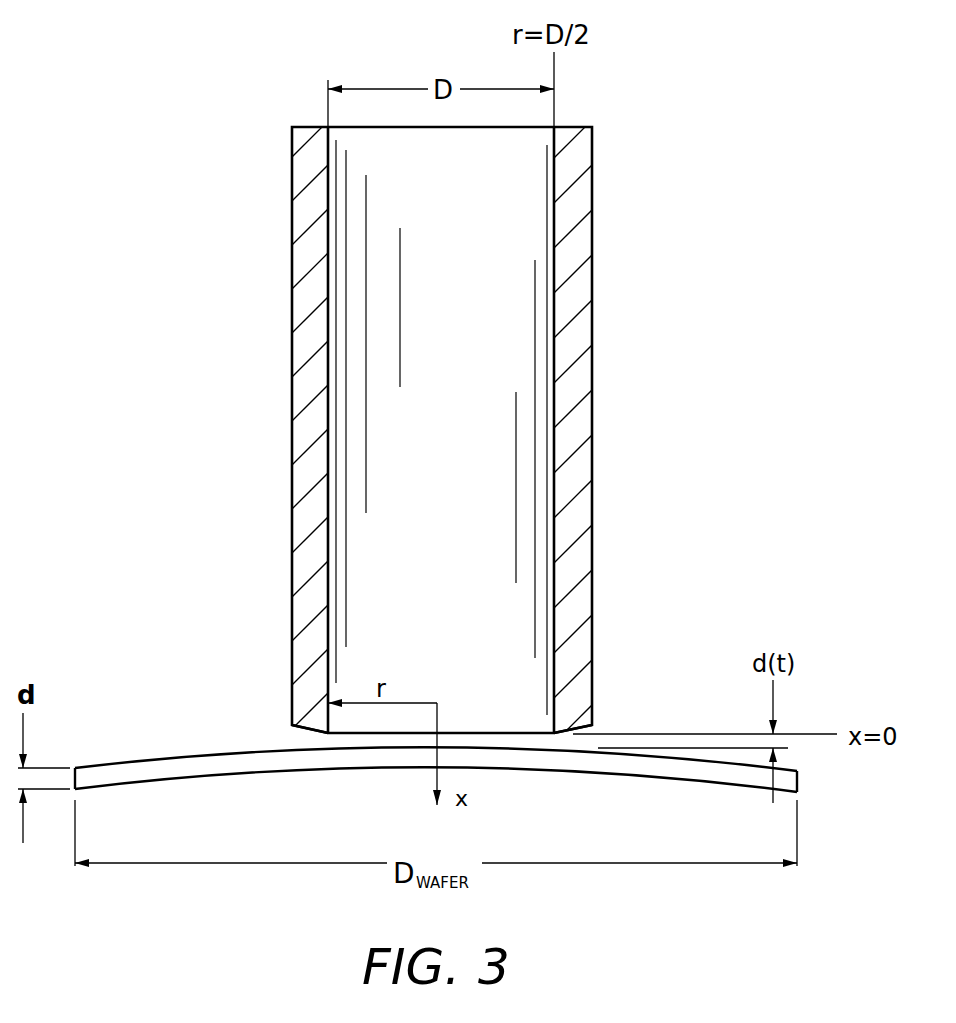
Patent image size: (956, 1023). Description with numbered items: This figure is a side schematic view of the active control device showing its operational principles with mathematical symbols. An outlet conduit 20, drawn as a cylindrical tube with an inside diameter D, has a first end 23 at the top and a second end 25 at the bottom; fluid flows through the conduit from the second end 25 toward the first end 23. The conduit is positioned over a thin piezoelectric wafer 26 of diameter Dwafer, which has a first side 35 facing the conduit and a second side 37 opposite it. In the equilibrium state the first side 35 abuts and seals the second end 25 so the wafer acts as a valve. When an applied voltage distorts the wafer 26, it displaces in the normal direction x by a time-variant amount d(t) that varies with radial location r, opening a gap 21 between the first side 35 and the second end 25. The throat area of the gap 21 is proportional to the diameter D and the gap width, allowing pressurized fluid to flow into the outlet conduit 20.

The outlet conduit 20 is at (292, 388).
The gap 21 is at (575, 740).
The first end 23 is at (313, 127).
The second end 25 is at (300, 737).
The wafer 26 is at (96, 765).
The first side 35 is at (212, 752).
The second side 37 is at (177, 777).